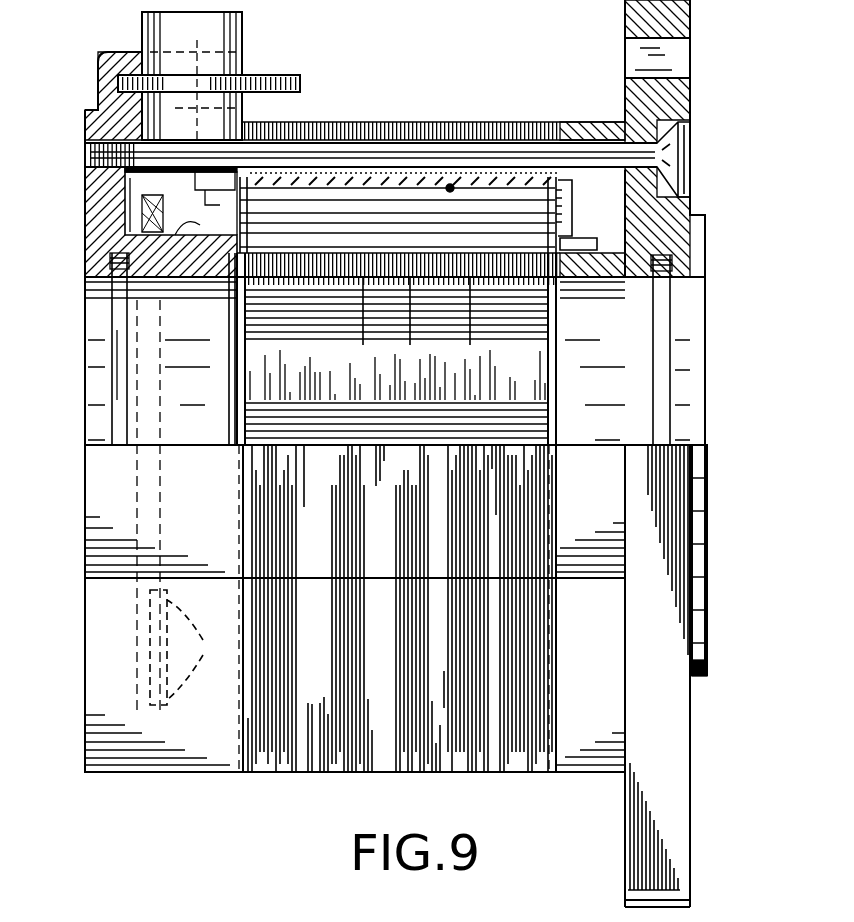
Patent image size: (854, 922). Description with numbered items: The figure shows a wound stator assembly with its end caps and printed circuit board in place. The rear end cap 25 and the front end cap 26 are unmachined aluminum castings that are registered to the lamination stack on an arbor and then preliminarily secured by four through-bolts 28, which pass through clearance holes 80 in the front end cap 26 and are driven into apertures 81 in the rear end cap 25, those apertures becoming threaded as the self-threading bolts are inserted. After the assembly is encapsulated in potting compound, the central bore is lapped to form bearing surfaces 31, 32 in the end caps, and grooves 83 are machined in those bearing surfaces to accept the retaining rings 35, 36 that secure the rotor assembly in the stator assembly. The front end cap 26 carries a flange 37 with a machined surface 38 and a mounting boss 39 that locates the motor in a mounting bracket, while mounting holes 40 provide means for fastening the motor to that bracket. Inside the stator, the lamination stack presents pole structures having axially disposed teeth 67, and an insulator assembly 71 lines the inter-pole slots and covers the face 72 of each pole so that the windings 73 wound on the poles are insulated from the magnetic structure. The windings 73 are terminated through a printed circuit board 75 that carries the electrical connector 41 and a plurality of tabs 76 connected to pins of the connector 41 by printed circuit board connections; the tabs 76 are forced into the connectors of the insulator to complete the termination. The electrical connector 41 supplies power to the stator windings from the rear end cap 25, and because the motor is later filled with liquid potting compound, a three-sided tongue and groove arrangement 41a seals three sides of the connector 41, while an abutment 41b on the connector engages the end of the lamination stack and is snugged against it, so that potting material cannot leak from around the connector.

The rear end cap 25 is at (112, 762).
The front end cap 26 is at (597, 757).
The through-bolt 28 is at (677, 157).
The bearing surface 31 is at (112, 303).
The bearing surface 32 is at (637, 293).
The retaining ring 35 is at (115, 350).
The retaining ring 36 is at (667, 383).
The flange 37 is at (685, 870).
The machined surface 38 is at (695, 768).
The mounting boss 39 is at (700, 688).
The mounting hole 40 is at (673, 78).
The electrical connector 41 is at (245, 24).
The tongue and groove arrangement 41a is at (142, 53).
The abutment 41b is at (283, 128).
The teeth 67 is at (560, 312).
The insulator assembly 71 is at (450, 185).
The pole face 72 is at (569, 197).
The windings 73 is at (370, 200).
The printed circuit board 75 is at (137, 645).
The tabs 76 is at (199, 650).
The clearance hole 80 is at (572, 155).
The aperture 81 is at (85, 150).
The groove 83 is at (115, 385).